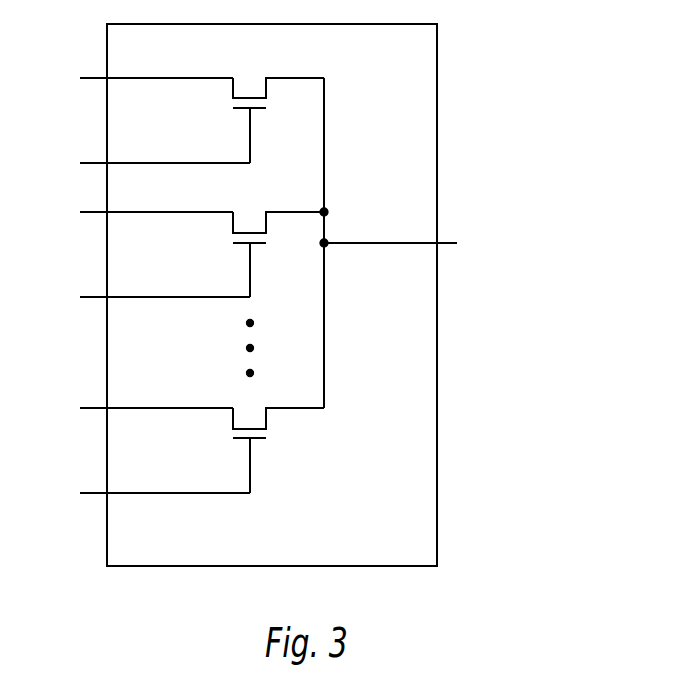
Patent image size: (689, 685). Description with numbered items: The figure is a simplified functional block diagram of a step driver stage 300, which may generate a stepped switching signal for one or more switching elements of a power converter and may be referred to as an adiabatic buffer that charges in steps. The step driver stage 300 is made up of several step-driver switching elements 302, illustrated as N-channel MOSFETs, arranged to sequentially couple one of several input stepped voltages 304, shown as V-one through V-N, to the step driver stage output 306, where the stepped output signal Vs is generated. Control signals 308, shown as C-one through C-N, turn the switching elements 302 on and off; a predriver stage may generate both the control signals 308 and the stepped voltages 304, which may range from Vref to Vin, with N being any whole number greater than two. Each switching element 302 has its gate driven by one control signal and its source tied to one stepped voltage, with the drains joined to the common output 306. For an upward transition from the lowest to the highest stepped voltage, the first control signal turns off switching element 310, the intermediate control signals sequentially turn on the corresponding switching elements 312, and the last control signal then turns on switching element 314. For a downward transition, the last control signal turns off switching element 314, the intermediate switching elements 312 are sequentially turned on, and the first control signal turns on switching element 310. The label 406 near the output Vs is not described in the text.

The step driver stage 300 is at (431, 51).
The step-driver switching elements 302 is at (250, 97).
The input stepped voltages 304 is at (95, 77).
The step driver stage output 306 is at (437, 246).
The control signals 308 is at (95, 162).
The switching element 310 is at (257, 439).
The switching elements 312 is at (257, 244).
The switching element 314 is at (257, 109).
The output voltage Vs 406 is at (490, 234).